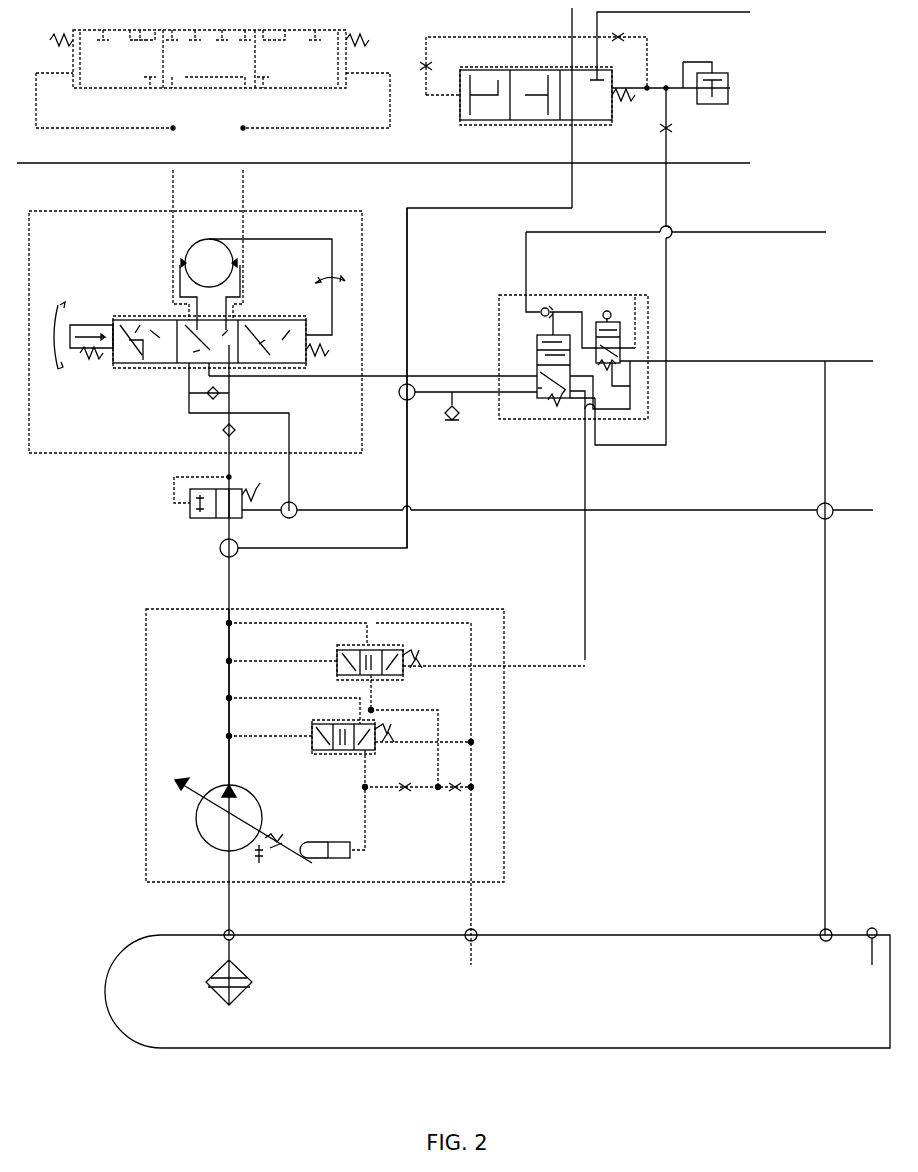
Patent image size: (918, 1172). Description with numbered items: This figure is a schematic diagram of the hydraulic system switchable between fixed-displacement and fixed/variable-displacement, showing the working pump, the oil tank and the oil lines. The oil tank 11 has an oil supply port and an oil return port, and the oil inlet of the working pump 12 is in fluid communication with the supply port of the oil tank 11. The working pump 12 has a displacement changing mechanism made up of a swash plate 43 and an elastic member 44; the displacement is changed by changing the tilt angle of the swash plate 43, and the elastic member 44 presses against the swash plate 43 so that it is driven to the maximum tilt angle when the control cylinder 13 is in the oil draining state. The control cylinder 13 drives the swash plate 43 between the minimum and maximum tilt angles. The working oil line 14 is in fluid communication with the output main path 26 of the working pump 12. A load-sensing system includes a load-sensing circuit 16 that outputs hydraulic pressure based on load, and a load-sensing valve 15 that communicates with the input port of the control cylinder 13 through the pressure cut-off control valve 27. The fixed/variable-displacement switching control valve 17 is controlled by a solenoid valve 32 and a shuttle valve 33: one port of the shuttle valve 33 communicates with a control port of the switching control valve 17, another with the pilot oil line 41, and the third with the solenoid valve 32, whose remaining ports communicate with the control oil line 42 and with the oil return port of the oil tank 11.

The oil tank 11 is at (573, 935).
The working pump 12 is at (254, 807).
The control cylinder 13 is at (312, 845).
The working oil line 14 is at (405, 456).
The load-sensing valve 15 is at (386, 656).
The load-sensing circuit 16 is at (478, 376).
The fixed/variable-displacement switching control valve 17 is at (538, 358).
The output main path 26 is at (228, 726).
The pressure cut-off control valve 27 is at (325, 730).
The solenoid valve 32 is at (608, 313).
The shuttle valve 33 is at (555, 308).
The pilot oil line 41 is at (612, 232).
The control oil line 42 is at (638, 303).
The swash plate 43 is at (187, 782).
The elastic member 44 is at (270, 842).